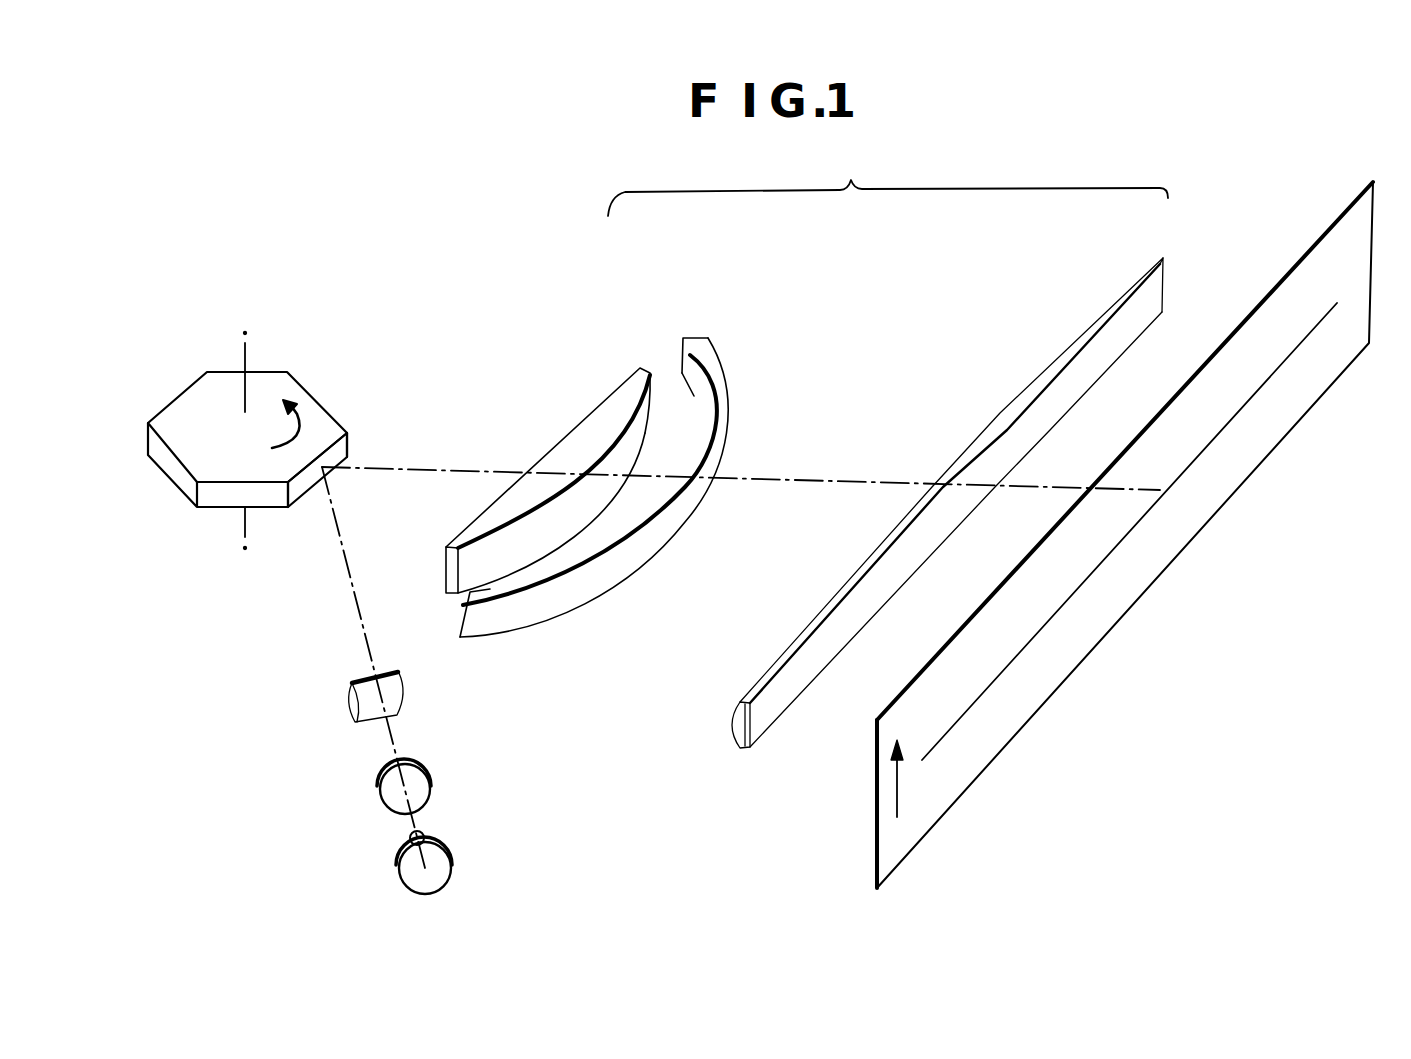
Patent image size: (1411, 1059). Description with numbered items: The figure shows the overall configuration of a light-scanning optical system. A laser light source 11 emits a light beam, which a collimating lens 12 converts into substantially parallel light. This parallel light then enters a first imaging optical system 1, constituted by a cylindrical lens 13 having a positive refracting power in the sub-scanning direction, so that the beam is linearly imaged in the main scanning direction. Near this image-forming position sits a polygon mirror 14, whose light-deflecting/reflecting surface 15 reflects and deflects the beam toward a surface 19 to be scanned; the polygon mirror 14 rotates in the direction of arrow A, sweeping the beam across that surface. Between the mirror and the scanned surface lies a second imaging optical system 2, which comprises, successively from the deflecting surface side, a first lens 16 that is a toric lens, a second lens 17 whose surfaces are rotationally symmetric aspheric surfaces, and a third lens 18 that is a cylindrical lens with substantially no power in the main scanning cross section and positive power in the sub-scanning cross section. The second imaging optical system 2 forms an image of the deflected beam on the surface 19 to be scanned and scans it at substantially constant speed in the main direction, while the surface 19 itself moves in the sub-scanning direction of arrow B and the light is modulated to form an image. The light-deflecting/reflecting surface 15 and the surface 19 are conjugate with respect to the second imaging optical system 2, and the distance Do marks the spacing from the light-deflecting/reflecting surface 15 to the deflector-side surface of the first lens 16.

The first imaging optical system 1 is at (327, 680).
The second imaging optical system 2 is at (807, 447).
The laser light source 11 is at (437, 868).
The collimating lens 12 is at (420, 787).
The cylindrical lens 13 is at (395, 698).
The polygon mirror 14 is at (278, 383).
The light-deflecting/reflecting surface 15 is at (298, 490).
The first lens 16 is at (585, 427).
The second lens 17 is at (710, 370).
The third lens 18 is at (1122, 295).
The surface to be scanned 19 is at (1003, 733).
The distance Do is at (420, 466).